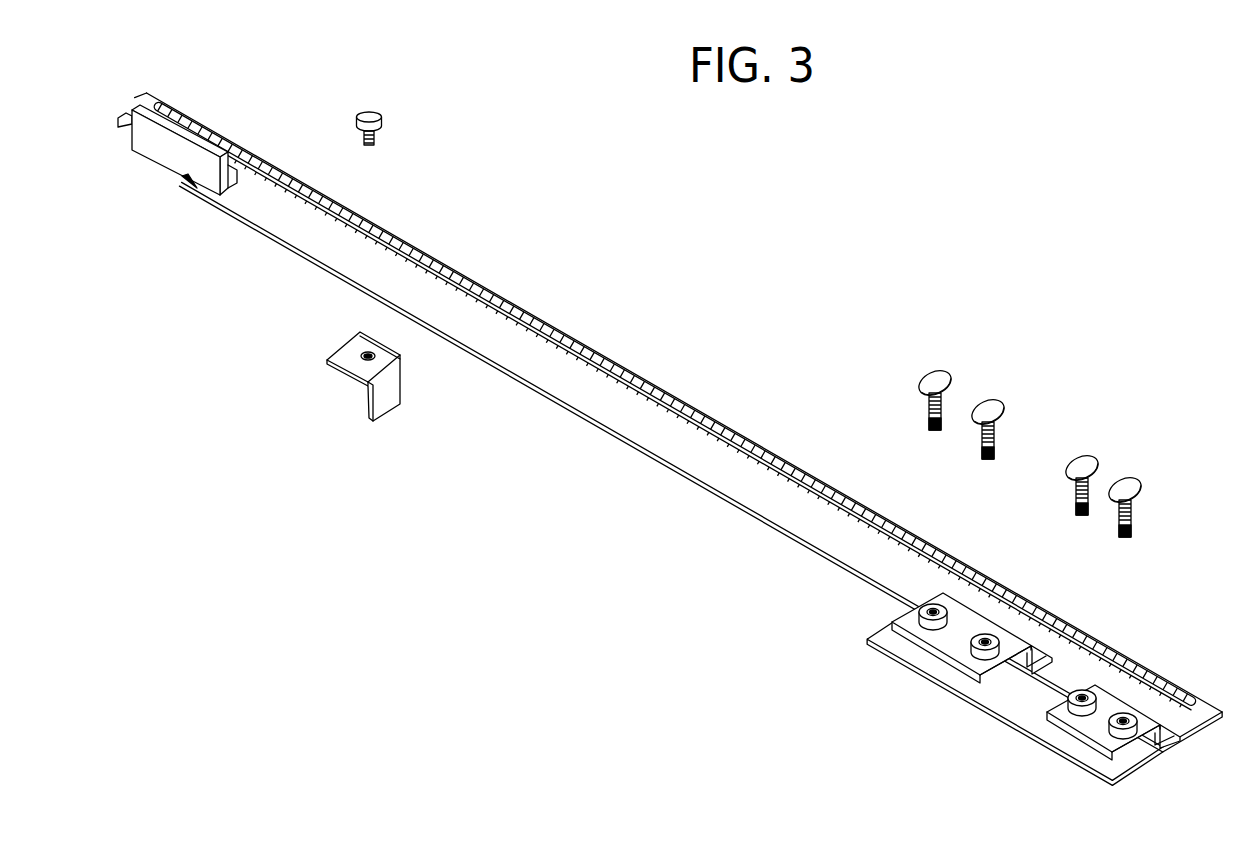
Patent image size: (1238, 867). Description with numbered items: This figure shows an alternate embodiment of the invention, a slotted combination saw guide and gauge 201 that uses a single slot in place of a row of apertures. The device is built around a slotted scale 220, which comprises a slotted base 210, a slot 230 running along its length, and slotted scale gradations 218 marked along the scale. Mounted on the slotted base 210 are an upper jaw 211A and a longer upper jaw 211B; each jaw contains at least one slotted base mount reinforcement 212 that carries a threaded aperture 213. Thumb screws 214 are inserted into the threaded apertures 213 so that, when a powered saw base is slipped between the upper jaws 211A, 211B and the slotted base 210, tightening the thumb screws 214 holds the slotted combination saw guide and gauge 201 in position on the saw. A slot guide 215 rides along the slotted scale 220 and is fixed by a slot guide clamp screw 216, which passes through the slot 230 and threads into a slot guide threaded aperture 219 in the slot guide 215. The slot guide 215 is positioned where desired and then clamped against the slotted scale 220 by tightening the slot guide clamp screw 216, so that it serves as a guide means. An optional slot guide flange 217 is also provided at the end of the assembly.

The slotted combination saw guide and gauge 201 is at (578, 412).
The slotted base 210 is at (1035, 730).
The upper jaw 211A is at (1077, 748).
The longer upper jaw 211B is at (905, 622).
The slotted base mount reinforcement 212 is at (923, 610).
The threaded aperture 213 is at (926, 621).
The thumb screws 214 is at (948, 372).
The slot guide 215 is at (527, 306).
The slot guide clamp screw 216 is at (383, 118).
The slot guide flange 217 is at (167, 160).
The slotted scale gradations 218 is at (667, 380).
The slot guide threaded aperture 219 is at (345, 346).
The slotted scale 220 is at (668, 466).
The slot 230 is at (493, 284).